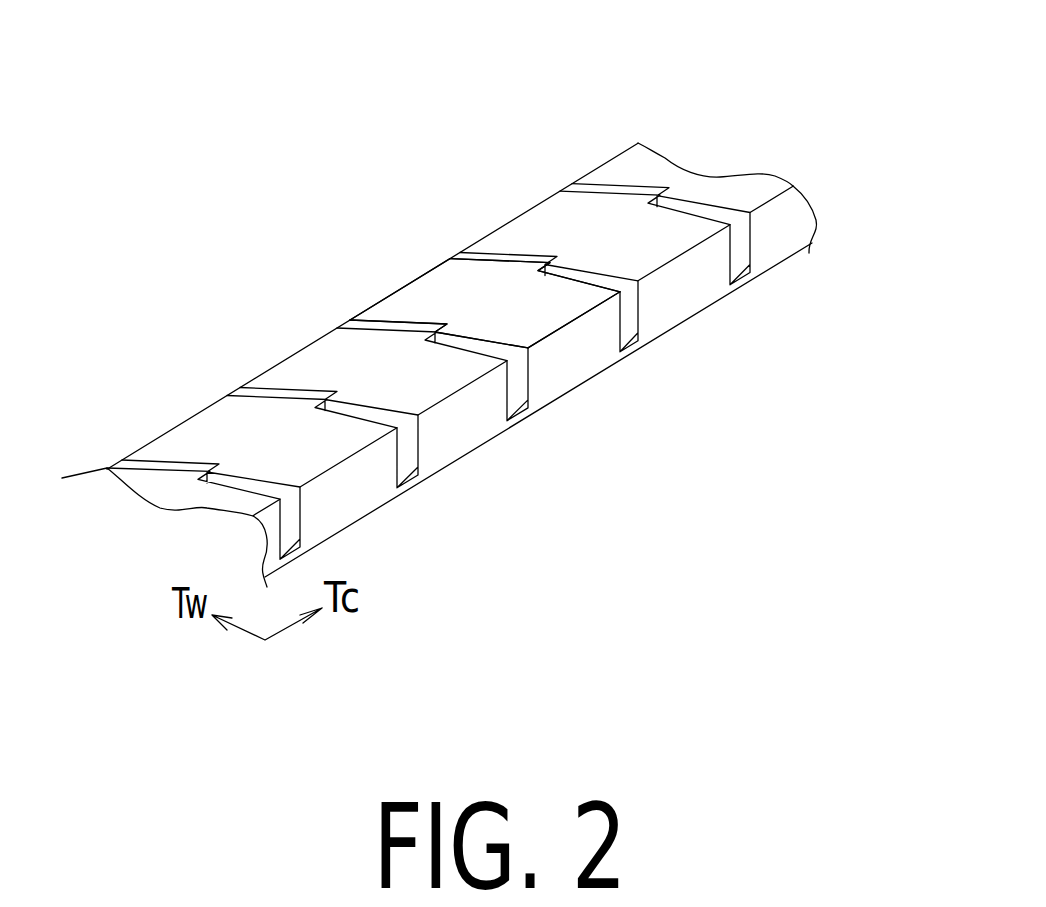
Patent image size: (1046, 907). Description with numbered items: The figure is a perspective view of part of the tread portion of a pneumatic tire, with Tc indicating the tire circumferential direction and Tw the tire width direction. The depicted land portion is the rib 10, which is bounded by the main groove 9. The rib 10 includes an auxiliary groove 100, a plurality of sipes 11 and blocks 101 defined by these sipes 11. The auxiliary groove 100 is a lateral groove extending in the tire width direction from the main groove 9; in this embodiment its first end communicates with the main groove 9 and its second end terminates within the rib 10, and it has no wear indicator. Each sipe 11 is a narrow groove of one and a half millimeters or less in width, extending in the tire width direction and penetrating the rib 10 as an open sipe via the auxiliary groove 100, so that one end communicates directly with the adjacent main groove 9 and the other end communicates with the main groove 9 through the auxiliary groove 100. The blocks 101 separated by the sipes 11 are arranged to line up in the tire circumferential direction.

The main groove 9 is at (523, 198).
The rib 10 is at (675, 110).
The sipe 11 is at (460, 338).
The auxiliary groove 100 is at (513, 418).
The block 101 is at (477, 315).